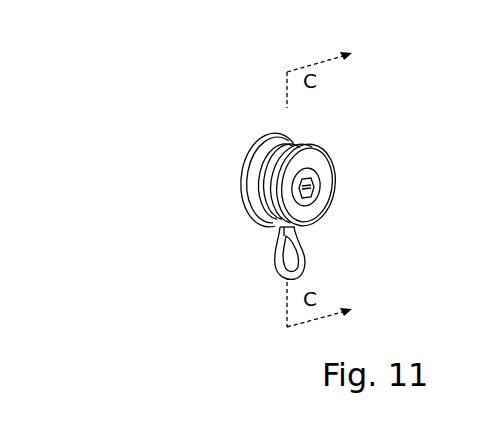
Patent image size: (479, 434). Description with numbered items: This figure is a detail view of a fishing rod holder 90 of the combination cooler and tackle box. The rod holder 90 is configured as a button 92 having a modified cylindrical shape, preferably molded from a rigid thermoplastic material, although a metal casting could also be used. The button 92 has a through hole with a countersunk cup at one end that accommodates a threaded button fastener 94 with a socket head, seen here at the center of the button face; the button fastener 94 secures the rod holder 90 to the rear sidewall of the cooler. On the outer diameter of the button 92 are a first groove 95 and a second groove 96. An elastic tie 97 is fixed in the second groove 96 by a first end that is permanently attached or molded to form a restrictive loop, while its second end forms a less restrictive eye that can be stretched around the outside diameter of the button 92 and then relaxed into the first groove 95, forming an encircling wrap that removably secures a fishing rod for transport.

The fishing rod holder 90 is at (126, 138).
The button 92 is at (247, 182).
The button fastener 94 is at (312, 193).
The first groove 95 is at (319, 144).
The second groove 96 is at (298, 141).
The elastic tie 97 is at (279, 259).